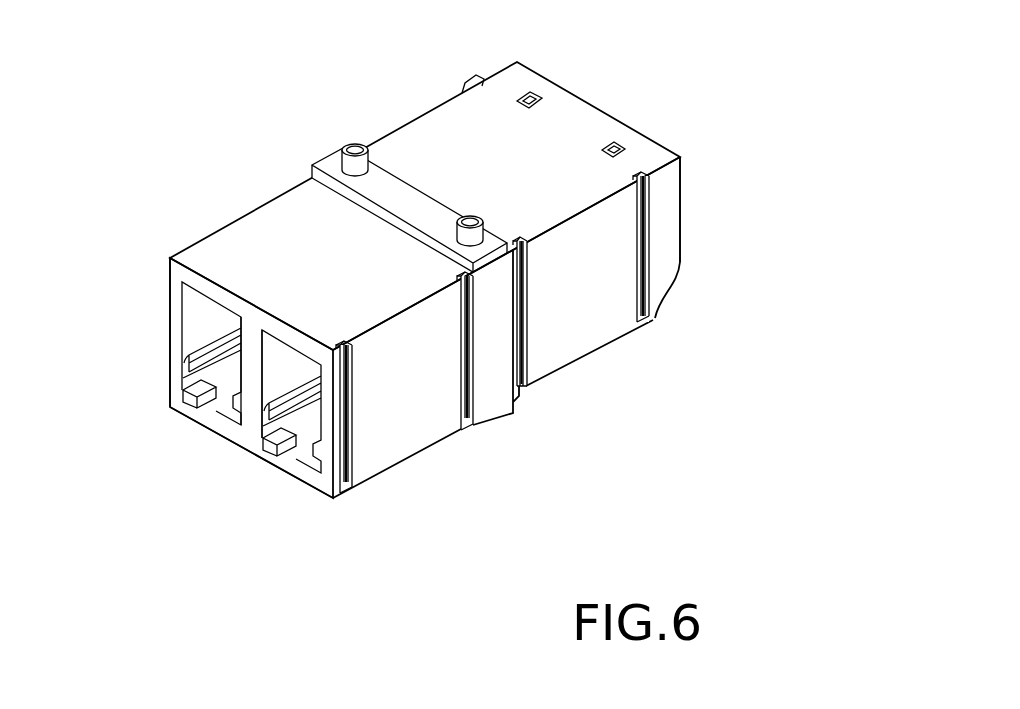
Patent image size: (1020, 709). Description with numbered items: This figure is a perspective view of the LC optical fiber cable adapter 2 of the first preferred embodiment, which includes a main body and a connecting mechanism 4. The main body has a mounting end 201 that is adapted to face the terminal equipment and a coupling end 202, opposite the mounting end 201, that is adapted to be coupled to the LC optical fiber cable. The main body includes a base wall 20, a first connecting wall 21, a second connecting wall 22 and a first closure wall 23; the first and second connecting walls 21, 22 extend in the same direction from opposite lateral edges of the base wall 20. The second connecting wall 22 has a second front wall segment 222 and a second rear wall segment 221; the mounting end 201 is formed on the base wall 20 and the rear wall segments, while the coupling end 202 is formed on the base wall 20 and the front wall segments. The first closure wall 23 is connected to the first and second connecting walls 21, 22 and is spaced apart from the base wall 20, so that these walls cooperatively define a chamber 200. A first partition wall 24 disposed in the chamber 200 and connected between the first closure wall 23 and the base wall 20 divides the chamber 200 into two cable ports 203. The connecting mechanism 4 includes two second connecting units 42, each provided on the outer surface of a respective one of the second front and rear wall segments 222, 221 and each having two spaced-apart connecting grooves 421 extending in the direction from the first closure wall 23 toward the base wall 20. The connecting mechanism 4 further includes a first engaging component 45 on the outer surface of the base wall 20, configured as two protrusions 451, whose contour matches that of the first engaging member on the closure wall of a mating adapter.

The LC optical fiber cable adapter 2 is at (412, 299).
The base wall 20 is at (440, 118).
The coupling end 202 is at (694, 119).
The first connecting wall 21 is at (170, 312).
The chamber 200 is at (165, 335).
The mounting end 201 is at (146, 390).
The cable port 203 is at (196, 423).
The first partition wall 24 is at (253, 396).
The first closure wall 23 is at (312, 492).
The second connecting wall 22 is at (535, 361).
The second rear wall segment 221 is at (382, 466).
The second front wall segment 222 is at (633, 332).
The connecting mechanism 4 is at (424, 307).
The second connecting unit 42 is at (470, 446).
The connecting groove 421 is at (340, 343).
The first engaging component 45 is at (304, 125).
The protrusion 451 is at (460, 233).